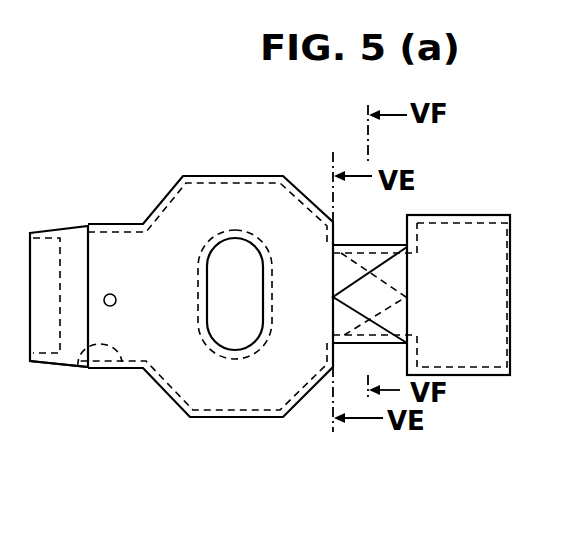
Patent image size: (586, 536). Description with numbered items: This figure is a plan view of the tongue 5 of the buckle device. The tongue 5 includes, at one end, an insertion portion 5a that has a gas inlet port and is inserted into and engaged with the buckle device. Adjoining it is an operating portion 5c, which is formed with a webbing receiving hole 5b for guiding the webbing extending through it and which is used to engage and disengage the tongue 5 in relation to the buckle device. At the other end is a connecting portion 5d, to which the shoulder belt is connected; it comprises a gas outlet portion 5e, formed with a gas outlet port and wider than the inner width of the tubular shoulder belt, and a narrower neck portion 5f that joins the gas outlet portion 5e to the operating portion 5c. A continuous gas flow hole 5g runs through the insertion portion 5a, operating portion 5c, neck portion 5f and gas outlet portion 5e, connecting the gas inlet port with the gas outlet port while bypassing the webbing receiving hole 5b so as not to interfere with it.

The tongue 5 is at (250, 159).
The insertion portion 5a is at (77, 228).
The webbing receiving hole 5b is at (214, 316).
The operating portion 5c is at (248, 393).
The connecting portion 5d is at (533, 183).
The gas outlet portion 5e is at (473, 237).
The neck portion 5f is at (386, 248).
The gas flow hole 5g is at (72, 370).